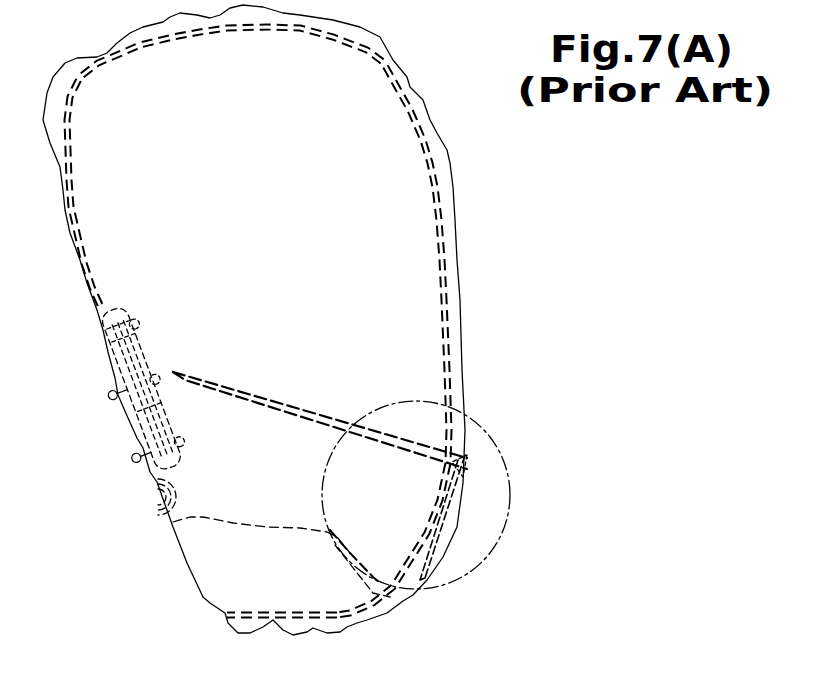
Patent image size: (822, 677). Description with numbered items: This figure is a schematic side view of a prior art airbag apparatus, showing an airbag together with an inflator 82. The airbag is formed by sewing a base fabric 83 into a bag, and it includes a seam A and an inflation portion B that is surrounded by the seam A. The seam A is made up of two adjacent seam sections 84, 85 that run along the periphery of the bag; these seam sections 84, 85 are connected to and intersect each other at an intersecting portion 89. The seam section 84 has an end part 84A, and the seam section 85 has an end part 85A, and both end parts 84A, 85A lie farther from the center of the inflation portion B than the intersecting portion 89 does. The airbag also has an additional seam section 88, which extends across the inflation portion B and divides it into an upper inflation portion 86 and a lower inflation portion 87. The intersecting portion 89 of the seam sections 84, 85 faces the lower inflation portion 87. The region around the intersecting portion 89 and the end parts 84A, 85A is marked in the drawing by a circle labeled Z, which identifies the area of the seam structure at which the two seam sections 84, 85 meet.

The inflator 82 is at (147, 353).
The base fabric 83 is at (453, 190).
The seam section 84 is at (443, 287).
The seam section 85 is at (343, 620).
The end part 85A is at (453, 487).
The end part 84A is at (430, 550).
The upper inflation portion 86 is at (266, 222).
The lower inflation portion 87 is at (254, 501).
The additional seam section 88 is at (264, 401).
The intersecting portion 89 is at (438, 510).
The enlarged region Z is at (507, 520).